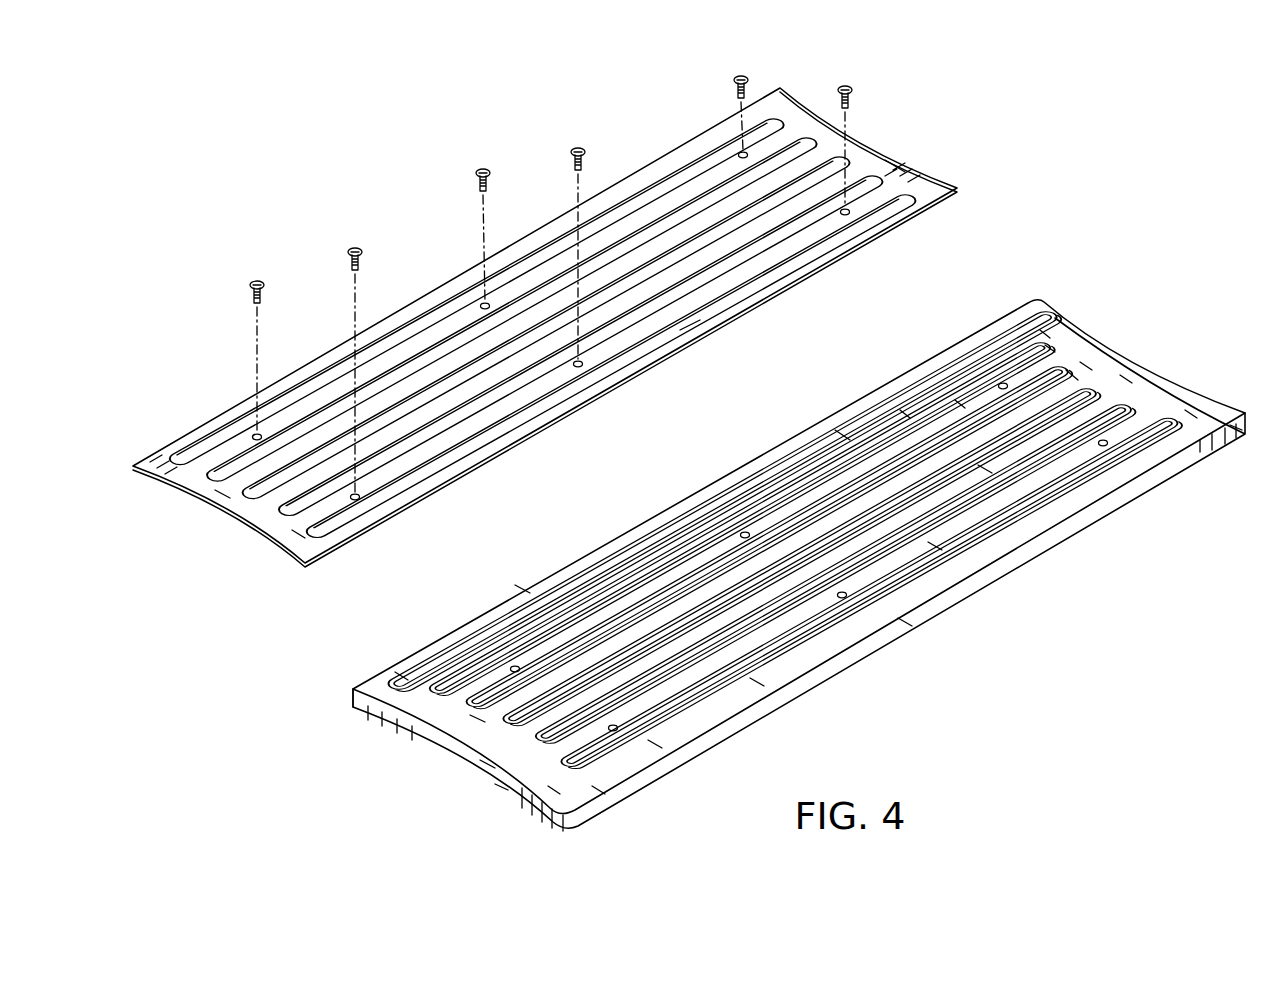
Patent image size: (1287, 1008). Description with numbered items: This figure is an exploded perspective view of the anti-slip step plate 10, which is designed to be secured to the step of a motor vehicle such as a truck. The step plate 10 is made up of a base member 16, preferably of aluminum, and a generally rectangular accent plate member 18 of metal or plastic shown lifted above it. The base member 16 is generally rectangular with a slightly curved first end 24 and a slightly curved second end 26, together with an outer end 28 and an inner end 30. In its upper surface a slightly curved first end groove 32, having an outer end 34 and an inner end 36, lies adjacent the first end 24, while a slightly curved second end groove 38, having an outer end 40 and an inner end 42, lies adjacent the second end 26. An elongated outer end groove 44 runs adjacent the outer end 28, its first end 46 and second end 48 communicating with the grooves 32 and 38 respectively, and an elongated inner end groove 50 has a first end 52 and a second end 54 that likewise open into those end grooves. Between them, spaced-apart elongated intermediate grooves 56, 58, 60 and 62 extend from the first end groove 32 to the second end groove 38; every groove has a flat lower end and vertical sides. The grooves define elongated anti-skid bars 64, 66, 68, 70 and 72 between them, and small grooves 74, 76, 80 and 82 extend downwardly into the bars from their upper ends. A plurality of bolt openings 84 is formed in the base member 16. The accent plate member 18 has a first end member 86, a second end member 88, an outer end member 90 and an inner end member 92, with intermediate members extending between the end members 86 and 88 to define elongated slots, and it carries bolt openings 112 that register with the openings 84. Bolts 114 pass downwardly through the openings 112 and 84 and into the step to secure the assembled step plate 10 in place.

The anti-slip step plate 10 is at (1045, 238).
The base member 16 is at (768, 500).
The accent plate member 18 is at (598, 340).
The first end 24 is at (490, 762).
The second end 26 is at (1127, 380).
The outer end 28 is at (905, 622).
The inner end 30 is at (523, 586).
The first end groove 32 is at (400, 677).
The outer end 34 is at (553, 790).
The inner end 36 is at (352, 698).
The second end groove 38 is at (1086, 366).
The outer end 40 is at (1192, 414).
The inner end 42 is at (1043, 337).
The outer end groove 44 is at (757, 683).
The first end 46 is at (598, 790).
The second end 48 is at (1226, 440).
The inner end groove 50 is at (838, 428).
The first end 52 is at (742, 519).
The second end 54 is at (725, 501).
The intermediate groove 56 is at (935, 548).
The intermediate groove 58 is at (985, 470).
The intermediate groove 60 is at (1048, 350).
The intermediate groove 62 is at (915, 425).
The anti-skid bar 64 is at (655, 745).
The anti-skid bar 66 is at (500, 786).
The anti-skid bar 68 is at (478, 718).
The anti-skid bar 70 is at (769, 538).
The anti-skid bar 72 is at (801, 557).
The small groove 74 is at (836, 574).
The small groove 76 is at (871, 593).
The small groove 80 is at (1070, 375).
The small groove 82 is at (965, 412).
The bolt openings 84 is at (847, 600).
The first end member 86 is at (222, 492).
The second end member 88 is at (885, 167).
The outer end member 90 is at (688, 337).
The inner end member 92 is at (438, 292).
The bolt openings 112 is at (298, 530).
The bolts 114 is at (350, 250).